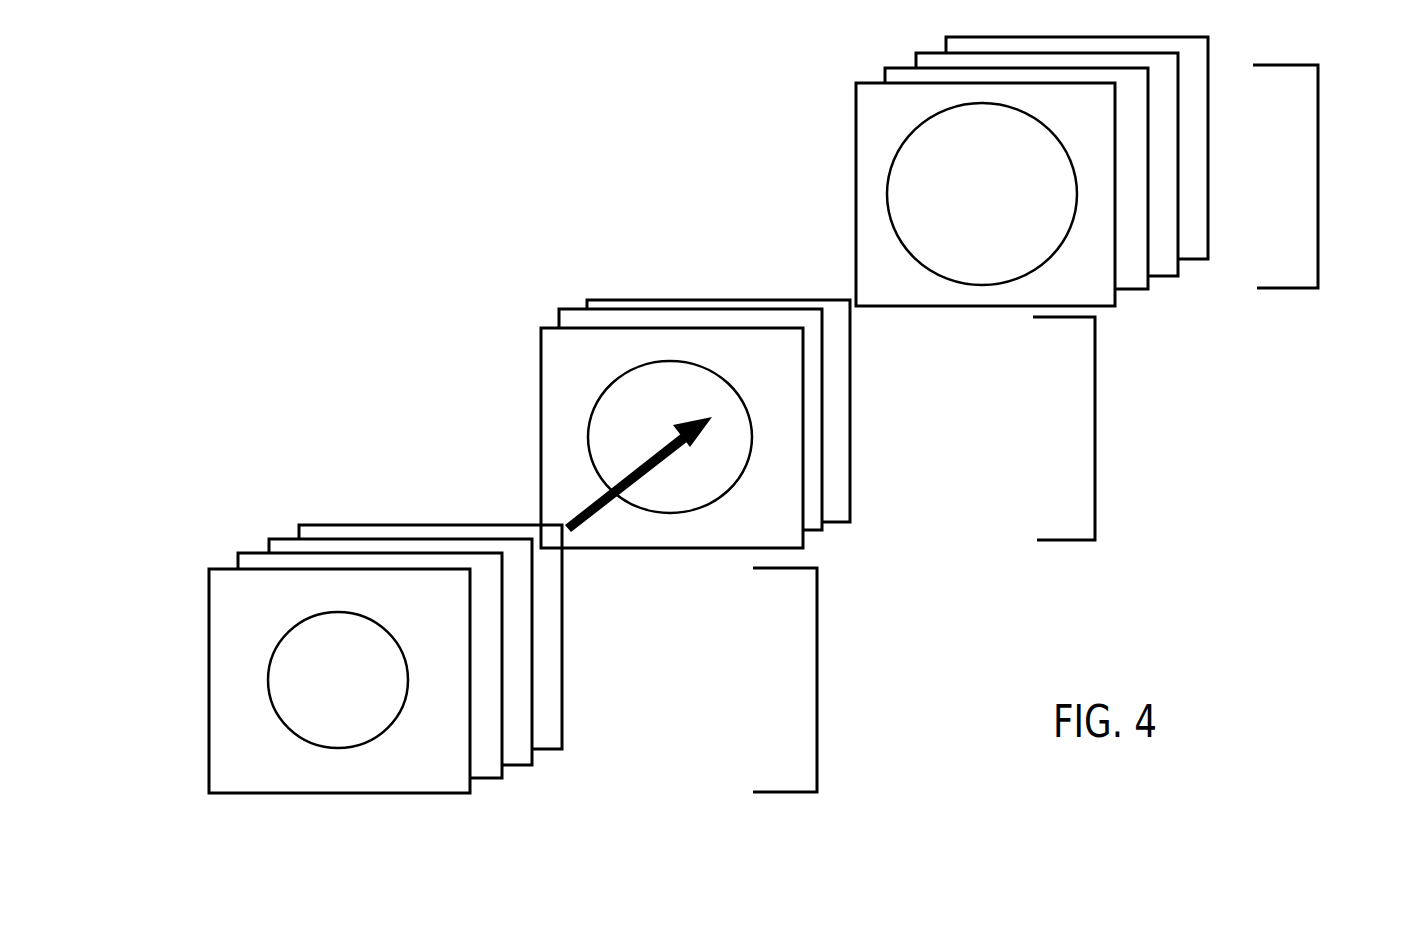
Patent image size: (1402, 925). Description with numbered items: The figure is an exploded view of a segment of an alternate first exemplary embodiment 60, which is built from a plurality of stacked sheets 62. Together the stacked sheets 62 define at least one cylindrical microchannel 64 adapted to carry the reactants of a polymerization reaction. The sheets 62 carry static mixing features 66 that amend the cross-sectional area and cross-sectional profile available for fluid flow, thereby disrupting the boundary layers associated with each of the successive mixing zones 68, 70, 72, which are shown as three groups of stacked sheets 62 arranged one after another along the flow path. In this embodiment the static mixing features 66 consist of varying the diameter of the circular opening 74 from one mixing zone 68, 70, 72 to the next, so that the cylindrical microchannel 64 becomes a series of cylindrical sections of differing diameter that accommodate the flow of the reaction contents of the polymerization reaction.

The alternate first exemplary embodiment 60 is at (474, 162).
The stacked sheets 62 is at (543, 698).
The cylindrical microchannel 64 is at (985, 285).
The static mixing features 66 is at (591, 425).
The mixing zone 68 is at (817, 677).
The mixing zone 70 is at (1095, 428).
The mixing zone 72 is at (1318, 177).
The circular opening 74 is at (591, 480).